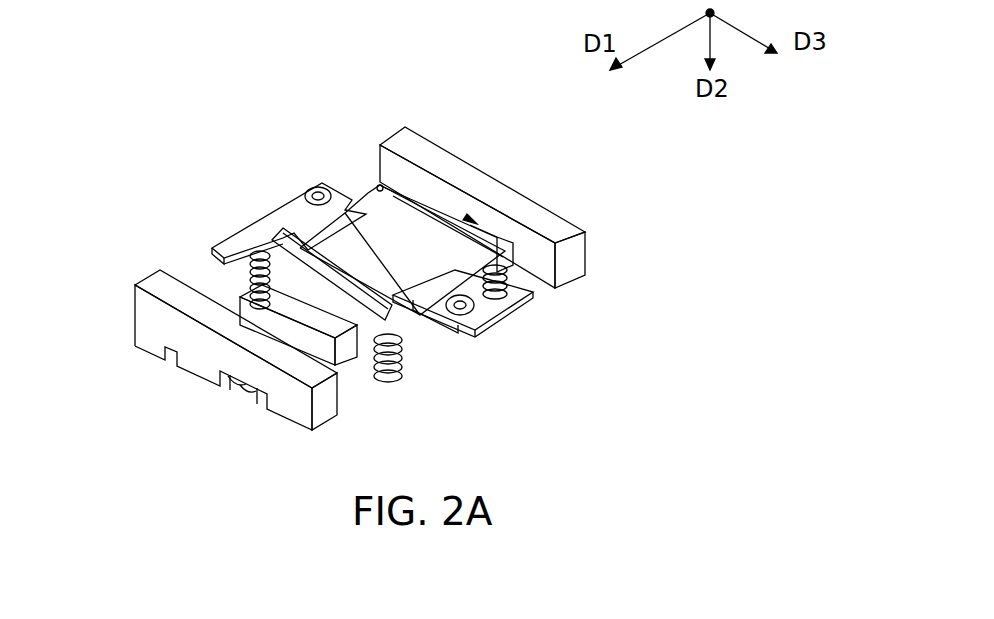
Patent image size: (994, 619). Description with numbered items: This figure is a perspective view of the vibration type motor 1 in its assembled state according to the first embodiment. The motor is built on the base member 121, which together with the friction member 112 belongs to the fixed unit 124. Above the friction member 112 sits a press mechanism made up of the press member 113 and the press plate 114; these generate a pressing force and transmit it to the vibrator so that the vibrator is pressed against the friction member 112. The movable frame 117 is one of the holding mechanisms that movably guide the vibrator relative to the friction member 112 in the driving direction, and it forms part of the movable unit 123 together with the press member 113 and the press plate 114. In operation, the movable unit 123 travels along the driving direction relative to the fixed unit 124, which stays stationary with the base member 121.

The vibration type motor 1 is at (148, 143).
The friction member 112 is at (300, 328).
The press member 113 is at (388, 335).
The press plate 114 is at (437, 240).
The movable frame 117 is at (445, 283).
The base member 121 is at (155, 343).
The movable unit 123 is at (282, 172).
The fixed unit 124 is at (510, 159).